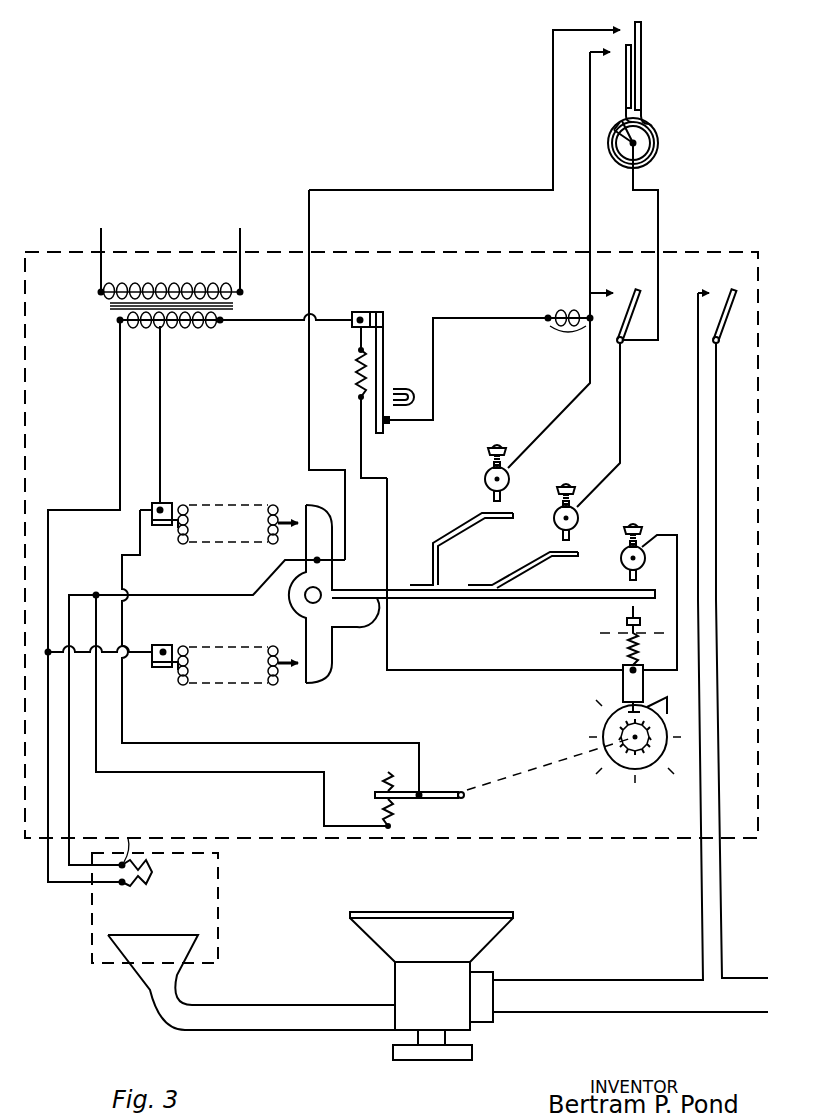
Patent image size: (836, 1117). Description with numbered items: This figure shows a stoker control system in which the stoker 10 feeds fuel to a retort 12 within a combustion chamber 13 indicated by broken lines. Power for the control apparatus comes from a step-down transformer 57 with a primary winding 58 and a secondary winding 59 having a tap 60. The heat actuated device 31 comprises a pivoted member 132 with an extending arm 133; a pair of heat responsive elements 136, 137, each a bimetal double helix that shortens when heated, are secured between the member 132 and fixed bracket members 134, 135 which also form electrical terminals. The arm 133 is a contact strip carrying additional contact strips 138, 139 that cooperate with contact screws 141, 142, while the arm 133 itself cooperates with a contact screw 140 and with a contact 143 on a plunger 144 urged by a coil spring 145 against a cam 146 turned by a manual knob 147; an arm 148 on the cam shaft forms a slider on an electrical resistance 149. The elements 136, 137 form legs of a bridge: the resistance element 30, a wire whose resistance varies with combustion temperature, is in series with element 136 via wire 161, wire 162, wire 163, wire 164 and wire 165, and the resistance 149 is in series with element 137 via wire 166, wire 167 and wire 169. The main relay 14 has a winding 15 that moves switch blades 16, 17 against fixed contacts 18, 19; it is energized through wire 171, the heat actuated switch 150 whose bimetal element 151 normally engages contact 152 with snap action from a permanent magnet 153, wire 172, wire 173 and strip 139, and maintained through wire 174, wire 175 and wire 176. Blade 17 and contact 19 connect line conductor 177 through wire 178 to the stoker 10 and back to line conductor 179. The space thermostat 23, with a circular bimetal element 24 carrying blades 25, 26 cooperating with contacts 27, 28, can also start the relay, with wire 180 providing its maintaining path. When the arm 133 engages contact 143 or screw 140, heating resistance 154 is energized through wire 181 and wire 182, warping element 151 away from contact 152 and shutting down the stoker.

The stoker 10 is at (444, 1005).
The retort 12 is at (140, 935).
The combustion chamber 13 is at (218, 917).
The main relay 14 is at (546, 300).
The winding 15 is at (565, 330).
The switch blade 16 is at (637, 316).
The switch blade 17 is at (735, 306).
The fixed electrical contact 18 is at (623, 290).
The fixed electrical contact 19 is at (716, 292).
The space thermostat 23 is at (660, 90).
The circular bimetal element 24 is at (658, 143).
The movable switch blade 25 is at (627, 72).
The movable switch blade 26 is at (641, 40).
The fixed electrical contact 27 is at (619, 53).
The fixed electrical contact 28 is at (628, 28).
The resistance element 30 is at (148, 878).
The heat actuated device 31 is at (262, 464).
The step-down transformer 57 is at (84, 307).
The primary winding 58 is at (181, 292).
The secondary winding 59 is at (203, 328).
The tap 60 is at (162, 332).
The pivoted member 132 is at (340, 630).
The extending arm 133 is at (498, 598).
The fixed bracket member 134 is at (176, 496).
The fixed bracket member 135 is at (172, 646).
The heat responsive element 136 is at (270, 503).
The heat responsive element 137 is at (270, 648).
The contact strip 138 is at (543, 560).
The contact strip 139 is at (468, 534).
The contact screw 140 is at (640, 530).
The contact screw 141 is at (576, 476).
The contact screw 142 is at (505, 440).
The contact 143 is at (627, 614).
The plunger 144 is at (638, 666).
The coil spring 145 is at (627, 650).
The cam 146 is at (645, 769).
The manual knob 147 is at (627, 746).
The arm 148 is at (436, 792).
The electrical resistance 149 is at (378, 790).
The heat actuated switch 150 is at (387, 303).
The bimetal element 151 is at (386, 341).
The fixed electrical contact 152 is at (388, 432).
The permanent magnet 153 is at (411, 380).
The electrical heating resistance 154 is at (359, 376).
The wire 161 is at (160, 418).
The wire 162 is at (207, 595).
The wire 163 is at (69, 778).
The wire 164 is at (48, 735).
The wire 165 is at (52, 580).
The wire 166 is at (122, 576).
The wire 167 is at (210, 772).
The wire 169 is at (135, 652).
The wire 171 is at (256, 320).
The wire 172 is at (478, 318).
The wire 173 is at (569, 412).
The wire 174 is at (588, 311).
The wire 175 is at (604, 293).
The wire 176 is at (620, 410).
The line conductor 177 is at (722, 956).
The wire 178 is at (594, 206).
The line conductor 179 is at (452, 190).
The wire 180 is at (658, 236).
The wire 181 is at (387, 640).
The wire 182 is at (677, 606).